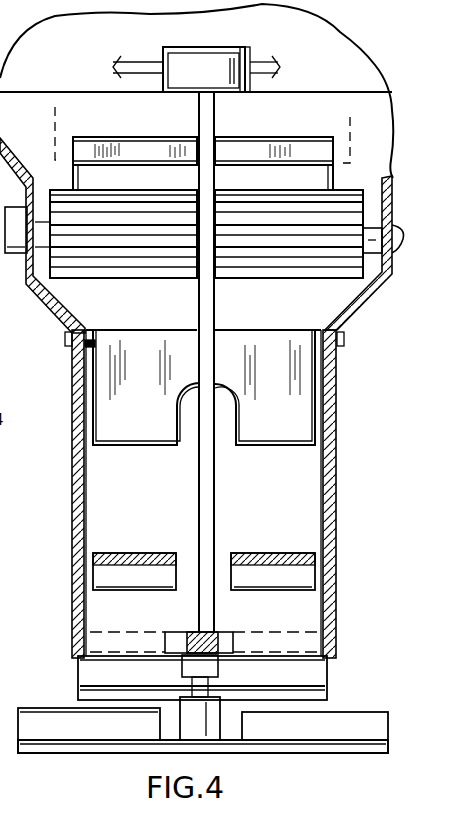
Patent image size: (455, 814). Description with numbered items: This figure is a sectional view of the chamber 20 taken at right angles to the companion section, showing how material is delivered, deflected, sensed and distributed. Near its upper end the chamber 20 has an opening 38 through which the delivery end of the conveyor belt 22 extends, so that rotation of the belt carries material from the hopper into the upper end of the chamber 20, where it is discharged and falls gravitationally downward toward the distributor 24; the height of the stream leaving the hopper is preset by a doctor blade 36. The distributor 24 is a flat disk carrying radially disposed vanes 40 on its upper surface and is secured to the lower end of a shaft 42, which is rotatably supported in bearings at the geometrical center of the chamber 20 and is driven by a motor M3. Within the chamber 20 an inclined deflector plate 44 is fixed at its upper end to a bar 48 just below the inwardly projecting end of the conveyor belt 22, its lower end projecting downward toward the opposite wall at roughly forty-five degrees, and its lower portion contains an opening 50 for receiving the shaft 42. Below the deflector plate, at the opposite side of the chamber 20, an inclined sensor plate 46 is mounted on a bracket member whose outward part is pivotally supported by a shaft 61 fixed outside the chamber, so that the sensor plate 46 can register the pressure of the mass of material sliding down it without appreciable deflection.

The chamber 20 is at (353, 437).
The conveyor belt 22 is at (175, 287).
The distributor 24 is at (50, 698).
The doctor blade 36 is at (133, 138).
The opening 38 is at (238, 143).
The vanes 40 is at (58, 727).
The shaft 42 is at (202, 537).
The inclined deflector plate 44 is at (277, 427).
The inclined sensor plate 46 is at (253, 557).
The bar 48 is at (89, 327).
The opening 50 is at (177, 430).
The shaft 61 is at (0, 484).
The motor M3 is at (170, 56).